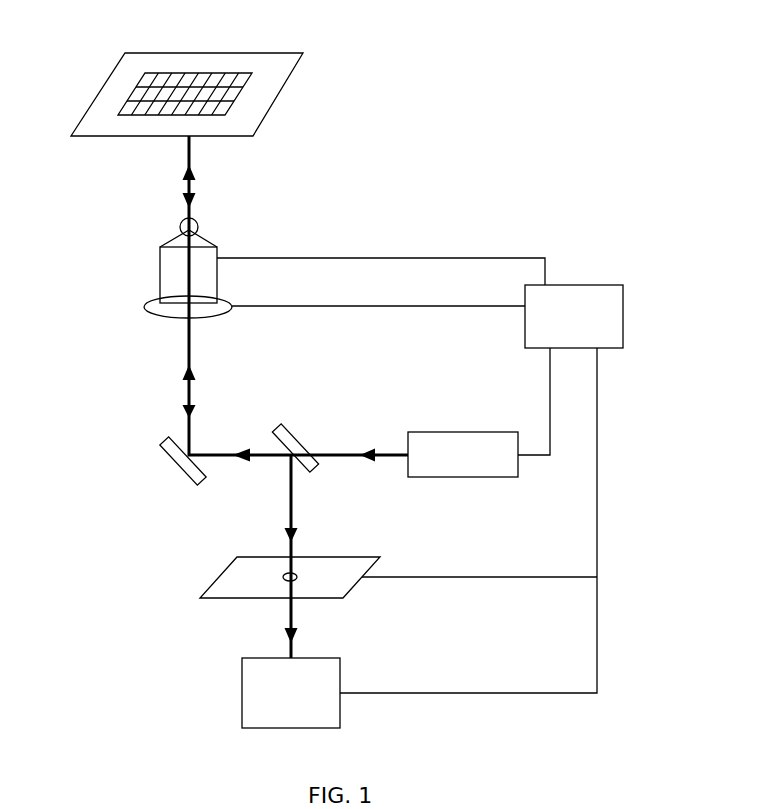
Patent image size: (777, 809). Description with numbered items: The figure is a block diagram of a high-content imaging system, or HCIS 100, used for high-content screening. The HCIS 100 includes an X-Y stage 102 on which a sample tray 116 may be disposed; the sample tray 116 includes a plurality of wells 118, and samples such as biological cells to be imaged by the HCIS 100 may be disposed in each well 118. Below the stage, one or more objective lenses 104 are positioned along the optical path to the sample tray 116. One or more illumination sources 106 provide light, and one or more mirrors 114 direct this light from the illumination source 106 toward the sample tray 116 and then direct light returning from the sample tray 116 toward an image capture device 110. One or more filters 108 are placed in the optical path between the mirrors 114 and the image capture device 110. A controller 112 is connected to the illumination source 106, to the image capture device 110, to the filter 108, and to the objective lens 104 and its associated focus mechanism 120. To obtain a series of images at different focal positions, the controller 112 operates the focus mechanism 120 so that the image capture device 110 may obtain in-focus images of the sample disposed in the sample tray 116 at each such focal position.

The high-content imaging system (HCIS) 100 is at (520, 108).
The X-Y stage 102 is at (278, 98).
The objective lens 104 is at (175, 257).
The illumination source 106 is at (443, 432).
The filter 108 is at (340, 555).
The image capture device 110 is at (242, 688).
The controller 112 is at (627, 298).
The mirror 114 is at (180, 460).
The sample tray 116 is at (228, 115).
The well 118 is at (153, 83).
The focus mechanism 120 is at (155, 305).